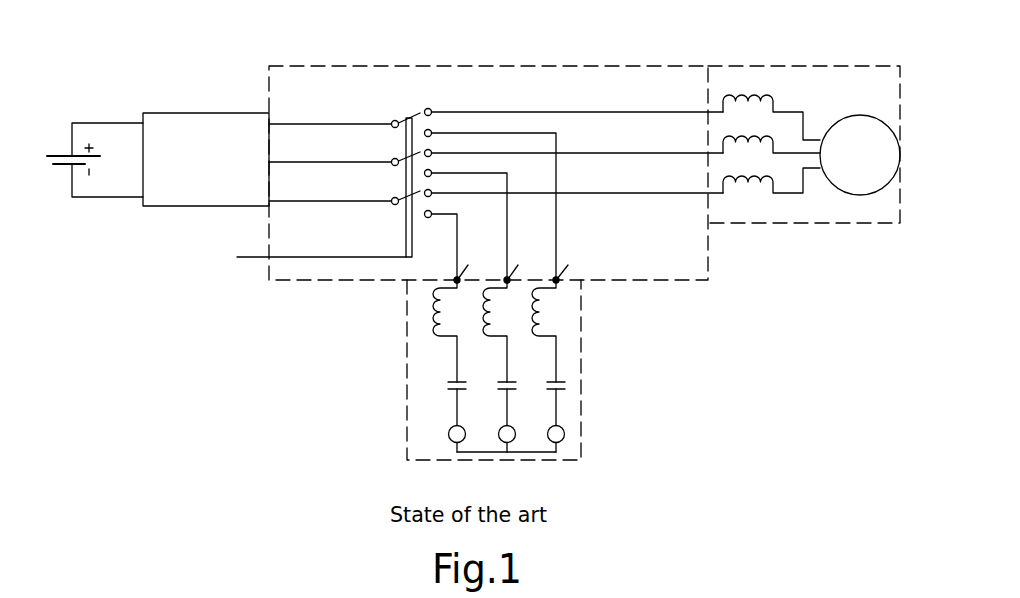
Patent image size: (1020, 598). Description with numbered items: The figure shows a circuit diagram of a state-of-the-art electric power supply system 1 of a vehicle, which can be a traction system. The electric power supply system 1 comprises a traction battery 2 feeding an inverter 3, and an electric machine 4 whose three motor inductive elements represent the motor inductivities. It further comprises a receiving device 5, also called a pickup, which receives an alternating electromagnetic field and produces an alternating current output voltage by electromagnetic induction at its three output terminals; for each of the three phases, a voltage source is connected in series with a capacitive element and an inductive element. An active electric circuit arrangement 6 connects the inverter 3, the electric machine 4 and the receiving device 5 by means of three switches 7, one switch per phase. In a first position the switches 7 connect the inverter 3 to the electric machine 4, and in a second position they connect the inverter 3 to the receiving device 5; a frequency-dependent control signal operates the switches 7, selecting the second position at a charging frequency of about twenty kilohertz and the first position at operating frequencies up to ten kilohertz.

The electric power supply system 1 is at (264, 437).
The traction battery 2 is at (57, 152).
The inverter 3 is at (234, 112).
The electric machine 4 is at (803, 63).
The receiving device 5 is at (582, 355).
The active electric circuit arrangement 6 is at (709, 268).
The switches 7 is at (394, 158).